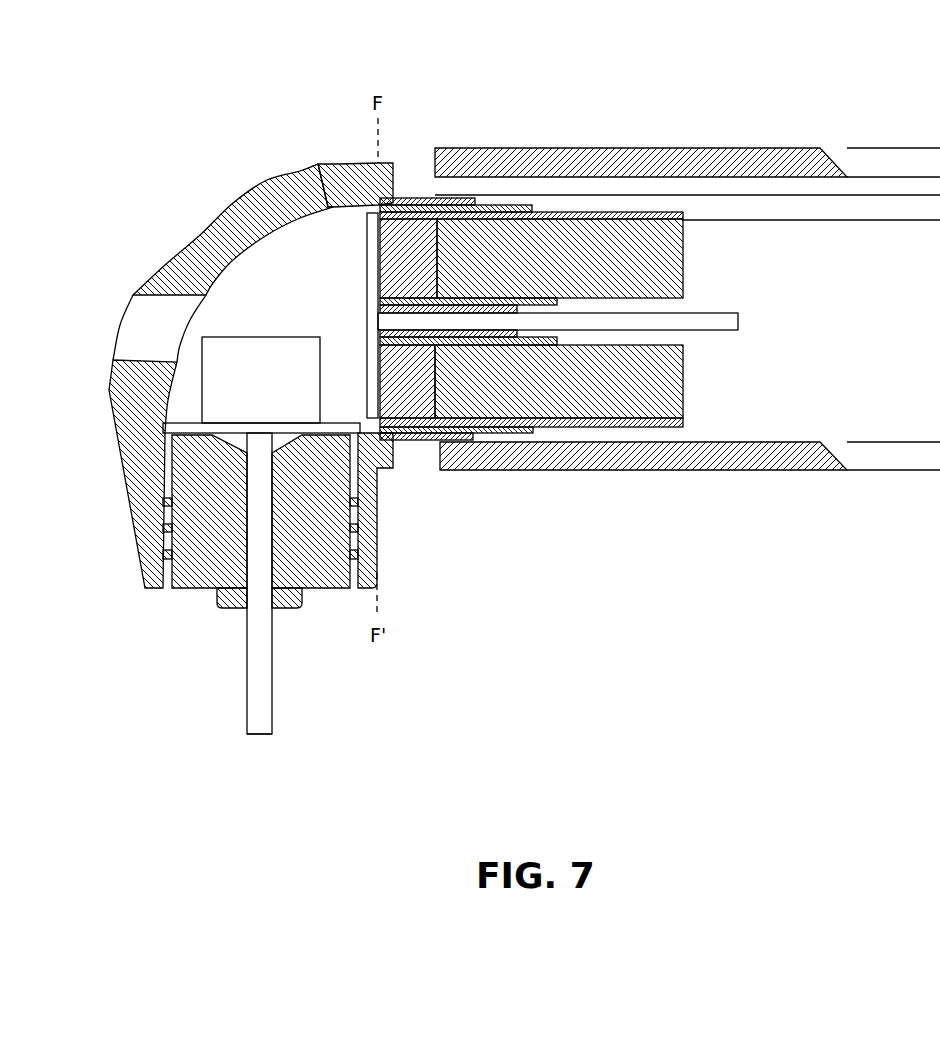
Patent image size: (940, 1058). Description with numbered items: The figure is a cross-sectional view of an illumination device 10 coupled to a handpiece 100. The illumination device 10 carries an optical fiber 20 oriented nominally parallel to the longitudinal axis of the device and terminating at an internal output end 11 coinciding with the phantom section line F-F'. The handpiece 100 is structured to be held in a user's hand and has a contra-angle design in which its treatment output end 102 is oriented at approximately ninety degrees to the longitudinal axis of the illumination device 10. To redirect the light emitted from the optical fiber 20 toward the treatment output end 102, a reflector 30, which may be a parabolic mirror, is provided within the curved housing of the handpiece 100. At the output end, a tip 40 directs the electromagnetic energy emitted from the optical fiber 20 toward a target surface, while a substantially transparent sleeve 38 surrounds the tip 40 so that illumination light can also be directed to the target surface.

The illumination device 10 is at (707, 127).
The housing block 11 is at (377, 317).
The optical fiber 20 is at (603, 320).
The reflector 30 is at (226, 255).
The sleeve 38 is at (190, 588).
The tip 40 is at (246, 661).
The handpiece 100 is at (158, 237).
The treatment output end 102 is at (272, 770).